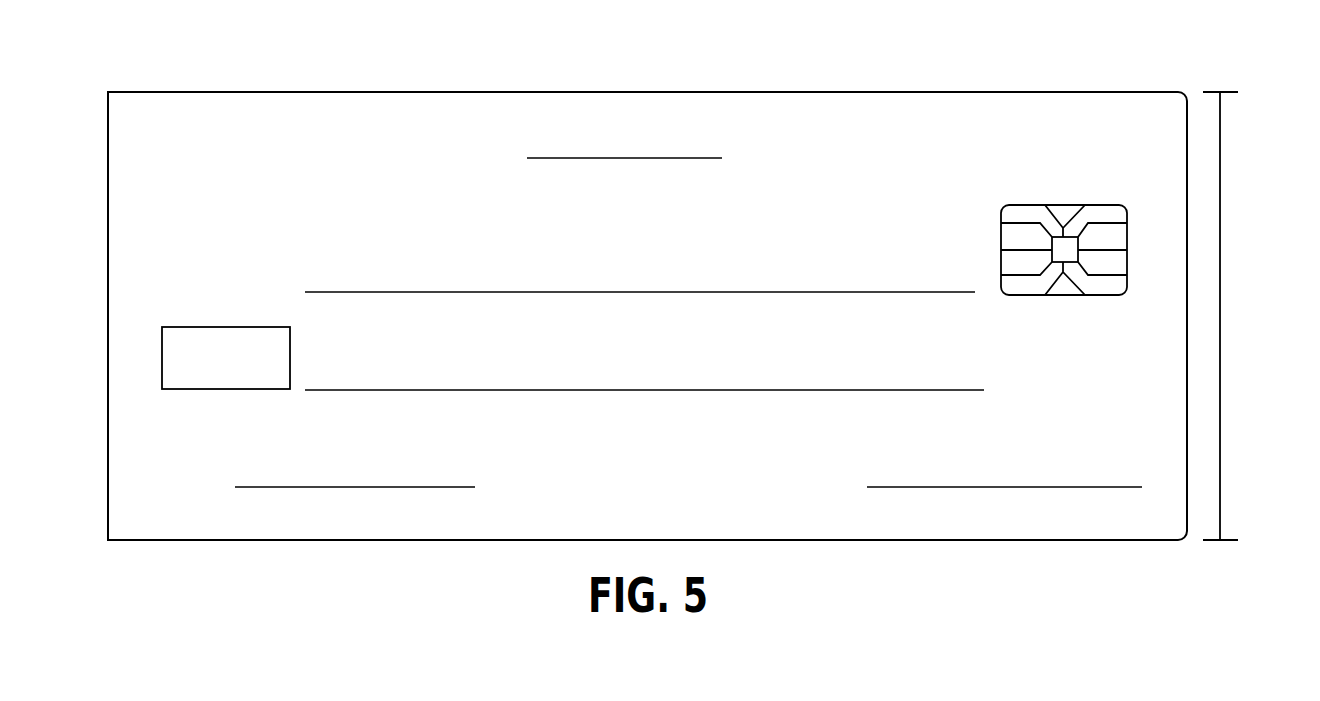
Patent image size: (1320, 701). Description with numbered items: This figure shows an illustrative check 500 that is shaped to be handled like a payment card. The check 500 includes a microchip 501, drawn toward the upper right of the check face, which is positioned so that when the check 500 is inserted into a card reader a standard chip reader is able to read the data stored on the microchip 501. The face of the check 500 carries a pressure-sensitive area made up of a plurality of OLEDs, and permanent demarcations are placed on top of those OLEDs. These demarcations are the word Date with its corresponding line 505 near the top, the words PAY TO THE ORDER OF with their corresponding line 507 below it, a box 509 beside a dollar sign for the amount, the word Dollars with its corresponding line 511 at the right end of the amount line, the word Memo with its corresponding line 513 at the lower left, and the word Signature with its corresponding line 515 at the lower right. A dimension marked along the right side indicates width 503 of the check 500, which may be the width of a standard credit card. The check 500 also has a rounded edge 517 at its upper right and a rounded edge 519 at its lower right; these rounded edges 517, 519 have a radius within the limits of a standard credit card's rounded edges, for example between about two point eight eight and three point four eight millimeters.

The check 500 is at (232, 74).
The microchip 501 is at (1080, 212).
The width 503 is at (1220, 185).
The Date line 505 is at (462, 150).
The PAY TO THE ORDER OF line 507 is at (185, 228).
The box 509 is at (174, 393).
The Dollars line 511 is at (1095, 374).
The Memo line 513 is at (183, 503).
The Signature line 515 is at (722, 478).
The rounded edge 517 is at (1188, 92).
The rounded edge 519 is at (1188, 540).